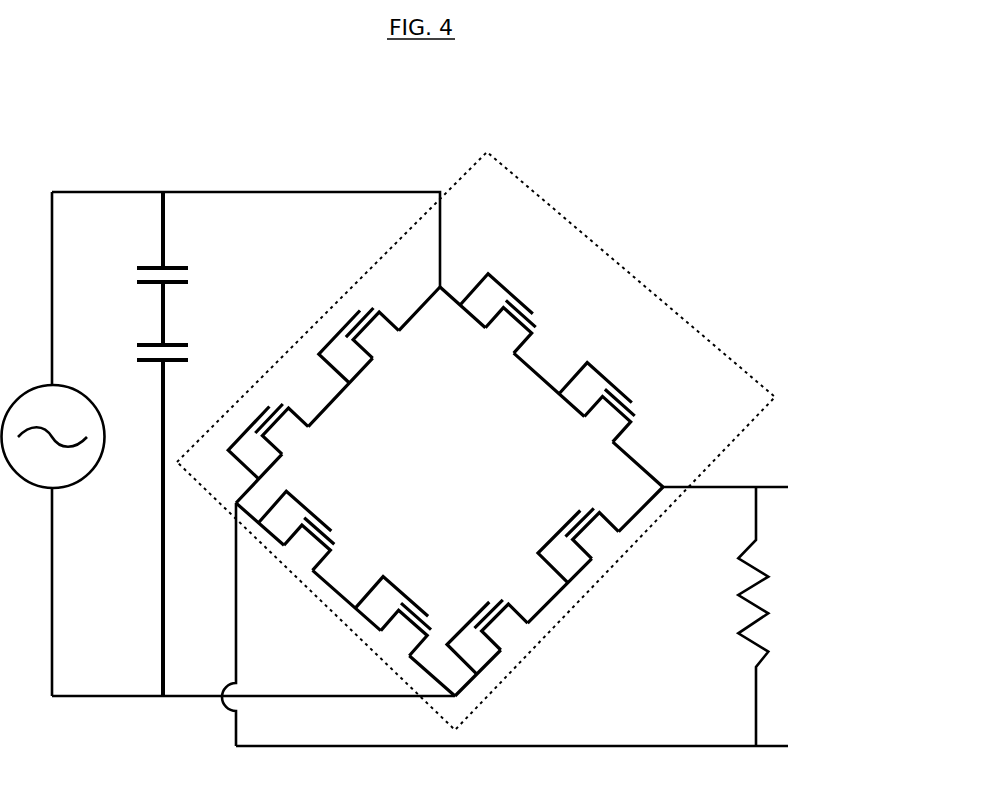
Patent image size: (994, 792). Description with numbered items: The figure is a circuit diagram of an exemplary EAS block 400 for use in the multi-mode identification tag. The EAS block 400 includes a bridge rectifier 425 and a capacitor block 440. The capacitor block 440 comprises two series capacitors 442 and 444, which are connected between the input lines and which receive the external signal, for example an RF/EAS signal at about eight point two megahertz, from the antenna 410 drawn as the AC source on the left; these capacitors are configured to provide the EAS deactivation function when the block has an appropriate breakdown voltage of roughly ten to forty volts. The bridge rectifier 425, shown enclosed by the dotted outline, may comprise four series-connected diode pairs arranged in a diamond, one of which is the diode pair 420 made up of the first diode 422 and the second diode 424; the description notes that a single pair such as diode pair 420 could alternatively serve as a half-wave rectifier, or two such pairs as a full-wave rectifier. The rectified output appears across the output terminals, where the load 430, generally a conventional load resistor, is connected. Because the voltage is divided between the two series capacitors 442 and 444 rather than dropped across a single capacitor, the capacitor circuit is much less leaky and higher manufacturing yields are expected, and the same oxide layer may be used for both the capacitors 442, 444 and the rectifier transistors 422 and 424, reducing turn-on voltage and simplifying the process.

The EAS block 400 is at (181, 109).
The antenna 410 is at (80, 485).
The diode pair 420 is at (445, 476).
The first diode 422 is at (503, 345).
The second diode 424 is at (603, 432).
The bridge rectifier 425 is at (476, 441).
The load 430 is at (772, 575).
The capacitor block 440 is at (184, 444).
The capacitor 442 is at (147, 263).
The capacitor 444 is at (147, 341).